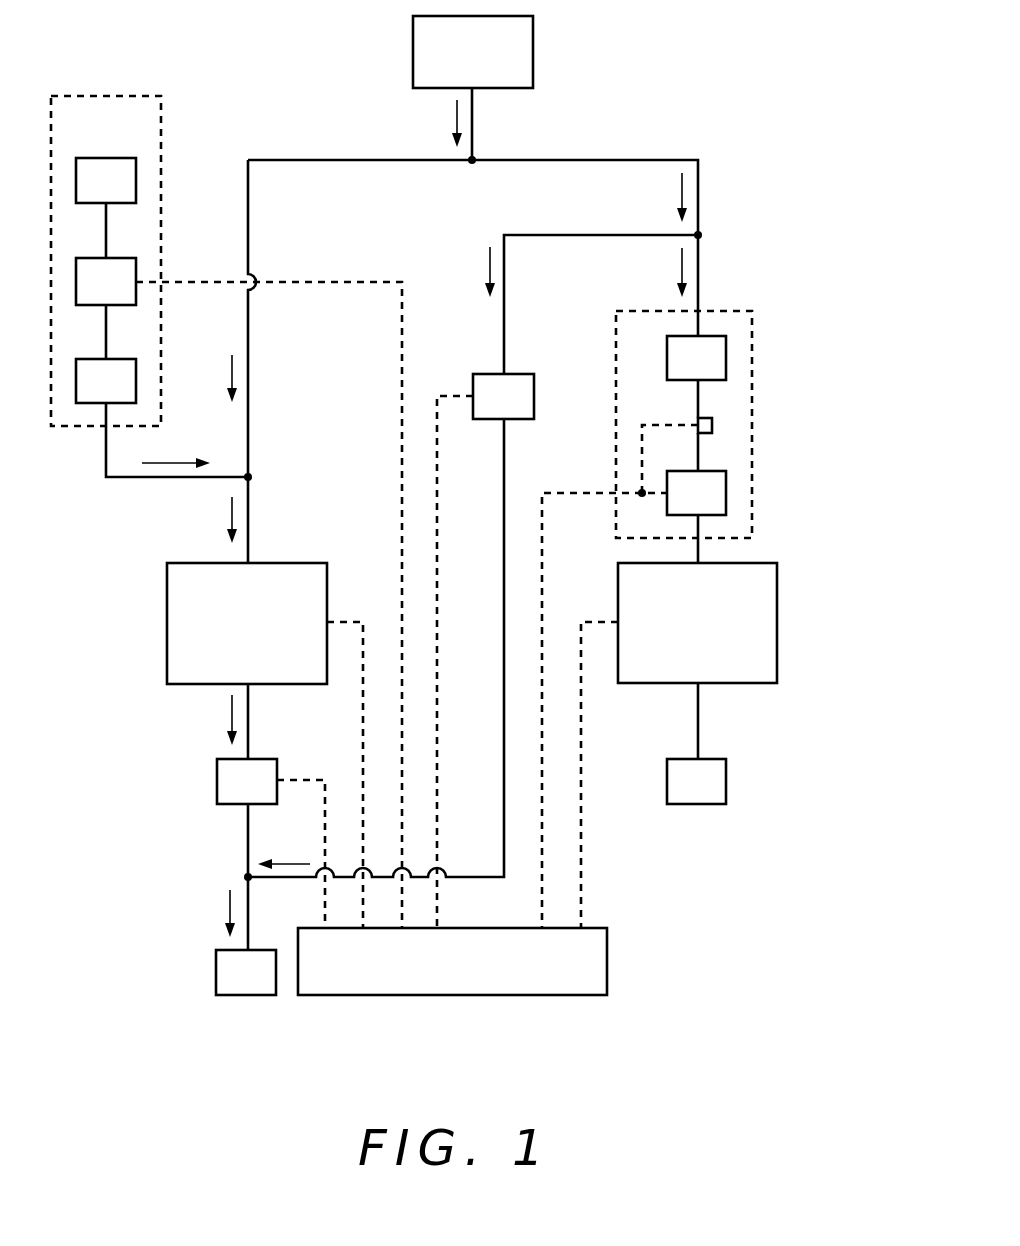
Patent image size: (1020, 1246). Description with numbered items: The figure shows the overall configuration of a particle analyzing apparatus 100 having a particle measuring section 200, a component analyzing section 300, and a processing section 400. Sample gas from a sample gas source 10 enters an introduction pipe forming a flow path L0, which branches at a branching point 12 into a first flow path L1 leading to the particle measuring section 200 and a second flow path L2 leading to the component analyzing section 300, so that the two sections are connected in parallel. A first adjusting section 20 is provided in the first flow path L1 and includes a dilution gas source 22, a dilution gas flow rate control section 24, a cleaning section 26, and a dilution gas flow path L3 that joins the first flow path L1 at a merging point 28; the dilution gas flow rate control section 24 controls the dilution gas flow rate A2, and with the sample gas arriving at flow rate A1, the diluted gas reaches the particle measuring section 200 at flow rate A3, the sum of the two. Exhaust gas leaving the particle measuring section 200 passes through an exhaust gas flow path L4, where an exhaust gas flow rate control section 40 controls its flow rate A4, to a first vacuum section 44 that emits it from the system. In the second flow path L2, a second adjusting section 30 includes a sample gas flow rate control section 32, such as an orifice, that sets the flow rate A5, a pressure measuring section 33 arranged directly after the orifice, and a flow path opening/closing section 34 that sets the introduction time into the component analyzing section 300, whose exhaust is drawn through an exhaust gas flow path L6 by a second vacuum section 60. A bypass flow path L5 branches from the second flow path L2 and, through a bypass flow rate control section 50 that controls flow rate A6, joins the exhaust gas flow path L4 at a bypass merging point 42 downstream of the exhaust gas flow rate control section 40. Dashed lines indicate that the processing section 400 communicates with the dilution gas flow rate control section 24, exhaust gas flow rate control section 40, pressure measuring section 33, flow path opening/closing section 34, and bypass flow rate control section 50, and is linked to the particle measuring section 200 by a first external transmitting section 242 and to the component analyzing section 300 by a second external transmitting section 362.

The sample gas source 10 is at (533, 50).
The branching point 12 is at (472, 162).
The first adjusting section 20 is at (108, 96).
The dilution gas source 22 is at (108, 158).
The dilution gas flow rate control section 24 is at (120, 258).
The cleaning section 26 is at (120, 359).
The merging point 28 is at (250, 477).
The second adjusting section 30 is at (723, 308).
The sample gas flow rate control section 32 is at (726, 358).
The pressure measuring section 33 is at (712, 425).
The flow path opening/closing section 34 is at (726, 493).
The exhaust gas flow rate control section 40 is at (217, 780).
The bypass merging point 42 is at (248, 877).
The first vacuum section 44 is at (216, 972).
The bypass flow rate control section 50 is at (518, 374).
The second vacuum section 60 is at (726, 782).
The particle analyzing apparatus 100 is at (432, 1063).
The particle measuring section 200 is at (167, 622).
The first external transmitting section 242 is at (363, 737).
The component analyzing section 300 is at (777, 622).
The second external transmitting section 362 is at (581, 853).
The processing section 400 is at (607, 962).
The flow path L0 is at (472, 125).
The first flow path L1 is at (360, 158).
The second flow path L2 is at (585, 158).
The dilution gas flow path L3 is at (105, 452).
The exhaust gas flow path L4 is at (248, 842).
The bypass flow path L5 is at (600, 235).
The exhaust gas flow path L6 is at (698, 720).
The flow rate A1 is at (217, 378).
The flow rate A2 is at (176, 453).
The flow rate A3 is at (217, 520).
The flow rate A4 is at (217, 720).
The flow rate A5 is at (667, 272).
The flow rate A6 is at (474, 272).